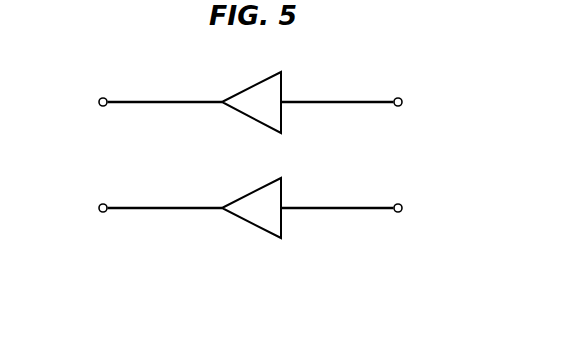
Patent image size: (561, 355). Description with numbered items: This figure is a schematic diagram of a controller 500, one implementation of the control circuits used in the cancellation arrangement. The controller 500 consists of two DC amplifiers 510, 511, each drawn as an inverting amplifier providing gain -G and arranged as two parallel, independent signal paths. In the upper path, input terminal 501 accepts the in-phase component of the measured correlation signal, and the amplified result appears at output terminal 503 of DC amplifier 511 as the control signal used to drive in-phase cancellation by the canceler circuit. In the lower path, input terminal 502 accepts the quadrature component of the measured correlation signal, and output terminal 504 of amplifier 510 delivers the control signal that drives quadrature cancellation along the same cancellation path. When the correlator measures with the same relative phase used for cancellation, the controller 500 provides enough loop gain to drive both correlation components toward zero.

The controller 500 is at (293, 284).
The input terminal 501 is at (359, 102).
The input terminal 502 is at (360, 208).
The output terminal 503 is at (141, 102).
The output terminal 504 is at (141, 208).
The DC amplifier 510 is at (282, 194).
The DC amplifier 511 is at (282, 89).